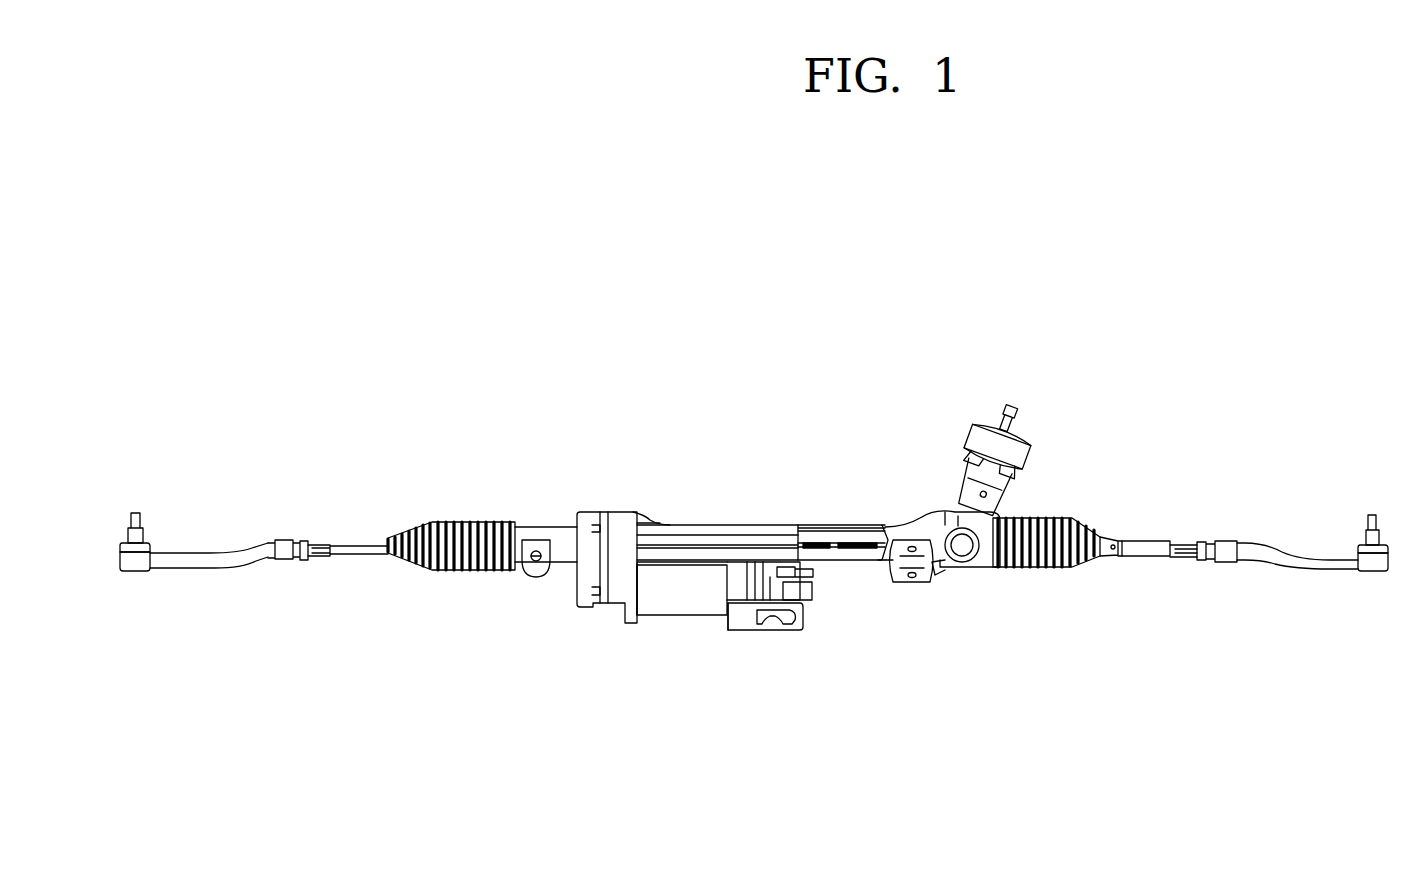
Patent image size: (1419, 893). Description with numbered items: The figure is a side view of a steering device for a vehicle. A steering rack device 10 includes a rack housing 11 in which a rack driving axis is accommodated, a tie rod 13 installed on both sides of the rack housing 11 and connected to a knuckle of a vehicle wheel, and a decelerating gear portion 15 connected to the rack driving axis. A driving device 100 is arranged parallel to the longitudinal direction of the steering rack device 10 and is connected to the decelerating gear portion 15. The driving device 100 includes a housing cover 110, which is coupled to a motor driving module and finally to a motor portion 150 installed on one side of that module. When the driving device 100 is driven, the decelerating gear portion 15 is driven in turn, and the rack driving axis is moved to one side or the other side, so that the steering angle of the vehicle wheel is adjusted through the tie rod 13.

The steering rack device 10 is at (552, 505).
The rack housing 11 is at (752, 530).
The tie rod 13 is at (213, 560).
The decelerating gear portion 15 is at (613, 540).
The driving device 100 is at (695, 633).
The housing cover 110 is at (768, 625).
The motor portion 150 is at (682, 603).